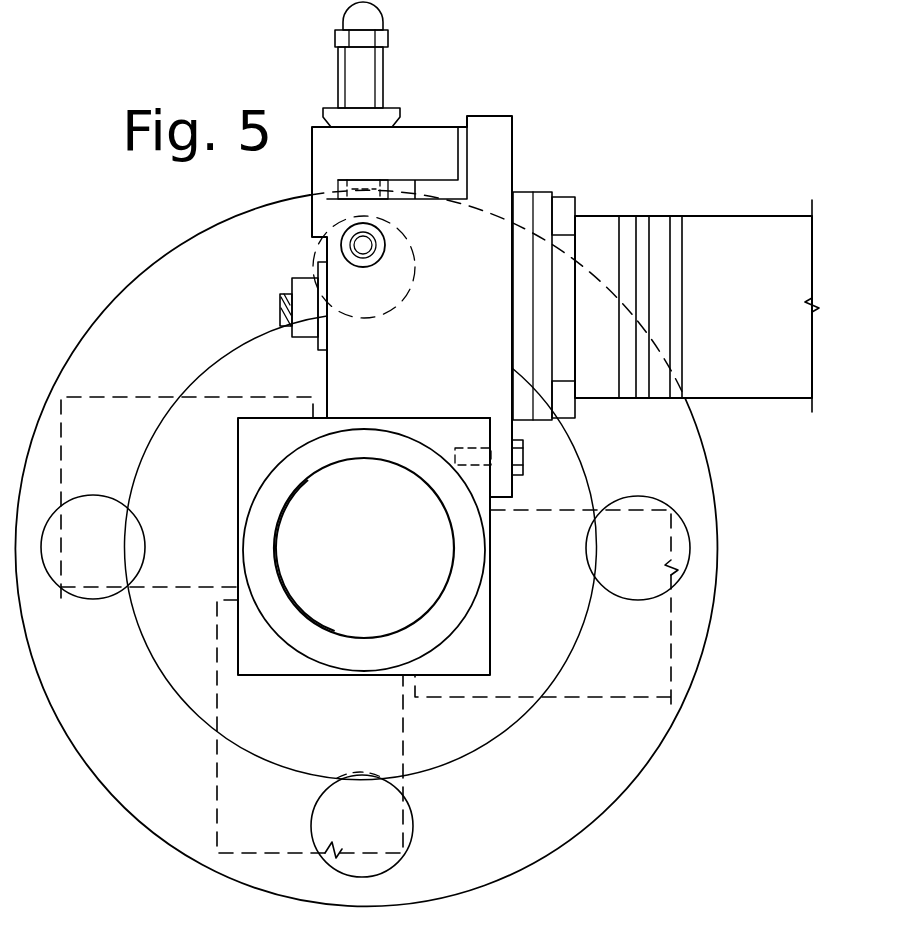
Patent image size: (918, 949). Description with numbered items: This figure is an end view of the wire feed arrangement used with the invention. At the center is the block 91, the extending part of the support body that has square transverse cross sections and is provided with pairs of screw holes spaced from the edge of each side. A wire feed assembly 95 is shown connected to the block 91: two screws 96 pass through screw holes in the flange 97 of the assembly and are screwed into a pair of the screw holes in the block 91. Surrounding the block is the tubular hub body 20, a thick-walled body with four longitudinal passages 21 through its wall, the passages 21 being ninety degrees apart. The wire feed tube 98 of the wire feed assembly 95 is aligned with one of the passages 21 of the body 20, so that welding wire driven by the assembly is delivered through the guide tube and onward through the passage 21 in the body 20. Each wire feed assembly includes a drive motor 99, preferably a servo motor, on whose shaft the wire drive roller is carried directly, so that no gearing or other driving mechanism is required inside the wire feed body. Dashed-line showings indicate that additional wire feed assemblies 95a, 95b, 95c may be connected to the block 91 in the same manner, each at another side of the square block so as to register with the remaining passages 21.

The tubular hub body 20 is at (710, 462).
The longitudinal passages 21 is at (424, 258).
The block 91 is at (491, 580).
The wire feed assembly 95 is at (572, 151).
The additional wire feed assembly 95a is at (583, 700).
The additional wire feed assembly 95b is at (217, 782).
The additional wire feed assembly 95c is at (126, 397).
The screws 96 is at (523, 455).
The flange 97 is at (513, 492).
The wire feed tube 98 is at (402, 238).
The drive motor 99 is at (717, 216).